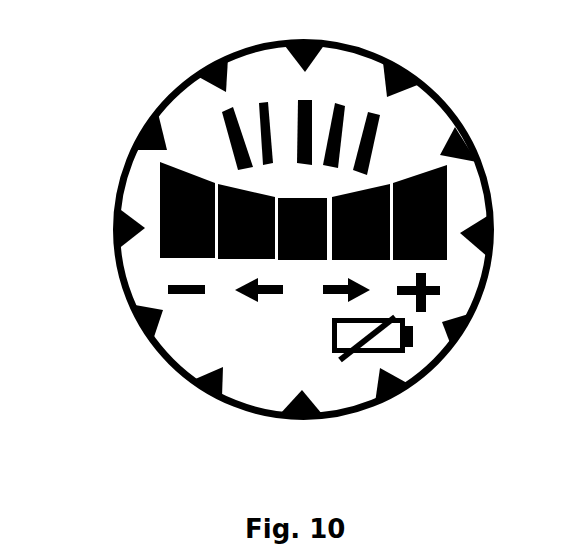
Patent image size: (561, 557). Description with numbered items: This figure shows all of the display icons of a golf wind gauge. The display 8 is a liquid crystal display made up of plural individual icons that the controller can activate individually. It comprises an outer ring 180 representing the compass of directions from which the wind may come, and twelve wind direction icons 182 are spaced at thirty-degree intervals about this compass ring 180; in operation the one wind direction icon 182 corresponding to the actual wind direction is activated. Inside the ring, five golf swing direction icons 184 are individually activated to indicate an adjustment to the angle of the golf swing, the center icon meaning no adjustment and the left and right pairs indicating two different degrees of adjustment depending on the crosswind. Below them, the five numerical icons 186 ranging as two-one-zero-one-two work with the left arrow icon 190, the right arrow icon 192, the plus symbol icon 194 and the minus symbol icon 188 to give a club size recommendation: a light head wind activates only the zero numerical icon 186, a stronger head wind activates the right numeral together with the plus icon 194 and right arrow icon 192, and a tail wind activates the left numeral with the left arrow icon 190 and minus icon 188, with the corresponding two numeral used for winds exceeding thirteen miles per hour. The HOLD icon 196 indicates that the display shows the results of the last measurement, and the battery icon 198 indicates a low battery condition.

The display 8 is at (87, 378).
The outer ring 180 is at (447, 108).
The wind direction icons 182 is at (227, 56).
The golf swing direction icons 184 is at (381, 117).
The numerical icons 186 is at (448, 200).
The minus symbol icon 188 is at (168, 288).
The left arrow icon 190 is at (235, 283).
The right arrow icon 192 is at (353, 283).
The plus symbol icon 194 is at (442, 292).
The HOLD icon 196 is at (271, 356).
The battery icon 198 is at (408, 353).